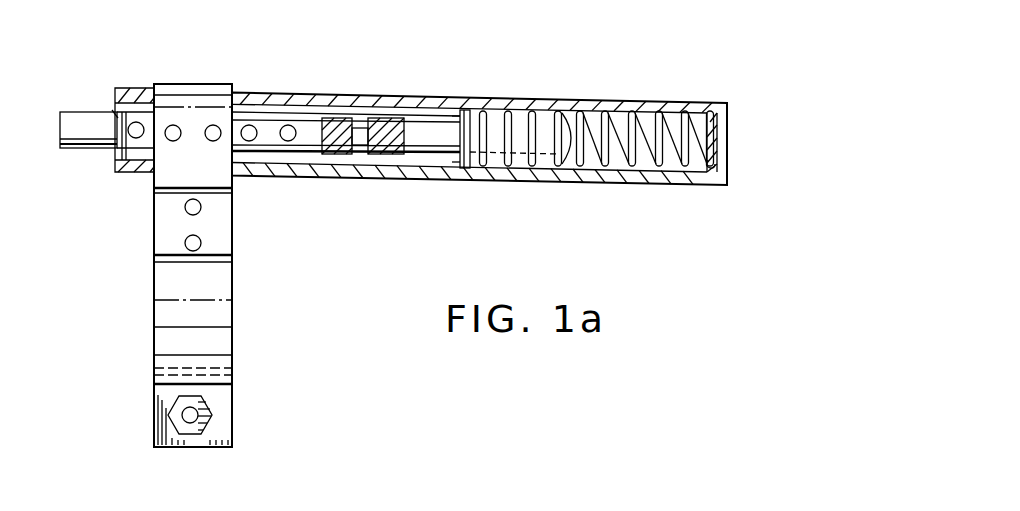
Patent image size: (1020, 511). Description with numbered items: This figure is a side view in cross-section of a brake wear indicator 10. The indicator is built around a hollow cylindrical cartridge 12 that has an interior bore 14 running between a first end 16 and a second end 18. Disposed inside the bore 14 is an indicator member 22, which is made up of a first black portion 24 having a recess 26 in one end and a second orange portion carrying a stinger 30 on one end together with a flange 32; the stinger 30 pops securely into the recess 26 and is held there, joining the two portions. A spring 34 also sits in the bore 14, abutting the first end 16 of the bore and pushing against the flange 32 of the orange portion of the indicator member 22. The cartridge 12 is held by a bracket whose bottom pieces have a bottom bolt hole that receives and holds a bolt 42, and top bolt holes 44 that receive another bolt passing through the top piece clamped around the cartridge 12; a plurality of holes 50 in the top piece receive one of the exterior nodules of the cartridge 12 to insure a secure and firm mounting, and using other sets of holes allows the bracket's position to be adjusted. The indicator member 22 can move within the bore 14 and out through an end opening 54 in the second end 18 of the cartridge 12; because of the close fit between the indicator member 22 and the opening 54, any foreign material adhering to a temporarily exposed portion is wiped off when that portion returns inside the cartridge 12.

The brake wear indicator 10 is at (148, 312).
The hollow cylindrical cartridge 12 is at (530, 99).
The interior bore 14 is at (600, 113).
The first end 16 is at (705, 170).
The second end 18 is at (132, 160).
The indicator member 22 is at (363, 98).
The first black portion 24 is at (84, 130).
The recess 26 is at (344, 154).
The stinger 30 is at (364, 154).
The flange 32 is at (463, 170).
The spring 34 is at (618, 167).
The bolt 42 is at (197, 437).
The top bolt holes 44 is at (202, 243).
The holes 50 is at (173, 141).
The end opening 54 is at (112, 110).